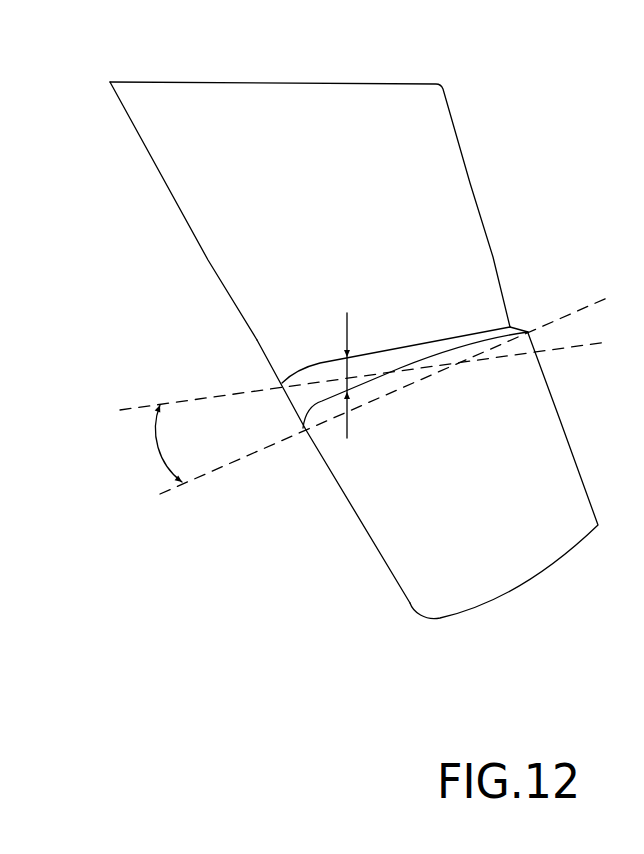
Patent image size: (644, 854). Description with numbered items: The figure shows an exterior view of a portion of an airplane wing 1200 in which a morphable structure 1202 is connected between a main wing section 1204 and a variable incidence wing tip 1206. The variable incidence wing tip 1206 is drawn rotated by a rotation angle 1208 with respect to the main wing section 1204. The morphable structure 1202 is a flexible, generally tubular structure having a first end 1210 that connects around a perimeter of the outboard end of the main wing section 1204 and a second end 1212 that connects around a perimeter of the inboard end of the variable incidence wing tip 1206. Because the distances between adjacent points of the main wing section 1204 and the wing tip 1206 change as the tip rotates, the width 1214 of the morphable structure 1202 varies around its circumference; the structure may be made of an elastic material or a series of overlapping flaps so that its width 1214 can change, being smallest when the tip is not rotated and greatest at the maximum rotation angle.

The airplane wing 1200 is at (560, 153).
The morphable structure 1202 is at (420, 344).
The main wing section 1204 is at (200, 210).
The variable incidence wing tip 1206 is at (402, 558).
The rotation angle 1208 is at (158, 447).
The first end 1210 is at (420, 345).
The second end 1212 is at (440, 352).
The width 1214 is at (345, 329).